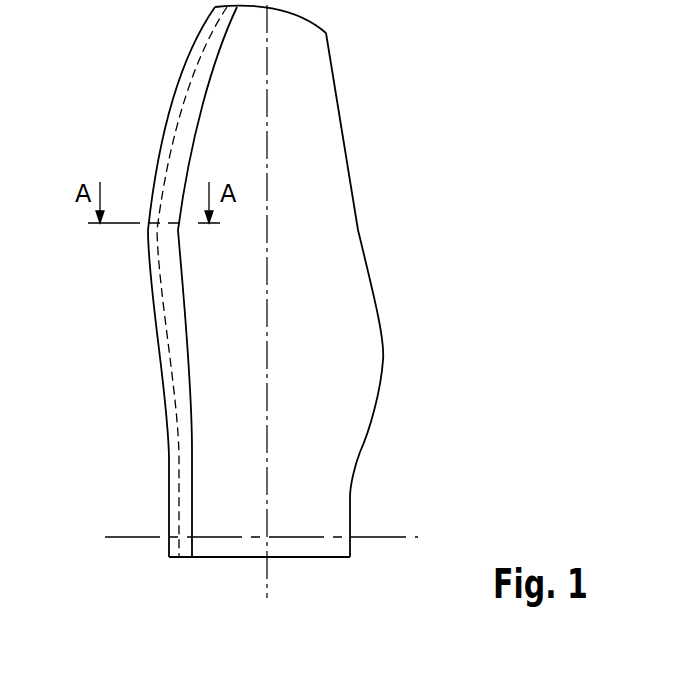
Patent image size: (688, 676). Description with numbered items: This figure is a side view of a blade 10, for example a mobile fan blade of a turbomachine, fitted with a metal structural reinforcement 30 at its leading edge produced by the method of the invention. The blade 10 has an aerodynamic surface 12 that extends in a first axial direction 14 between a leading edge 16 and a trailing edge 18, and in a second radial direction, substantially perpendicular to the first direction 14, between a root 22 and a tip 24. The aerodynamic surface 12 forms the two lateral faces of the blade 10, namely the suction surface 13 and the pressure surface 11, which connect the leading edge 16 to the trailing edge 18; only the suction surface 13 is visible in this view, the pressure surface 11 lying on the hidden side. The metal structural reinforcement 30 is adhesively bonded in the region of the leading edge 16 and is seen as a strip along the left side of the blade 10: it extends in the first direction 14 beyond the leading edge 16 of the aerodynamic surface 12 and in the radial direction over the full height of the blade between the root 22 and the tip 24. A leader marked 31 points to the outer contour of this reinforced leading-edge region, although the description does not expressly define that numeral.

The blade 10 is at (286, 332).
The pressure surface 11 is at (402, 418).
The aerodynamic surface 12 is at (350, 369).
The suction surface 13 is at (332, 478).
The first axial direction 14 is at (105, 537).
The leading edge 16 is at (163, 302).
The trailing edge 18 is at (357, 218).
The root 22 is at (312, 558).
The tip 24 is at (313, 23).
The metal structural reinforcement 30 is at (182, 126).
The outer surface of leading edge 31 is at (158, 358).